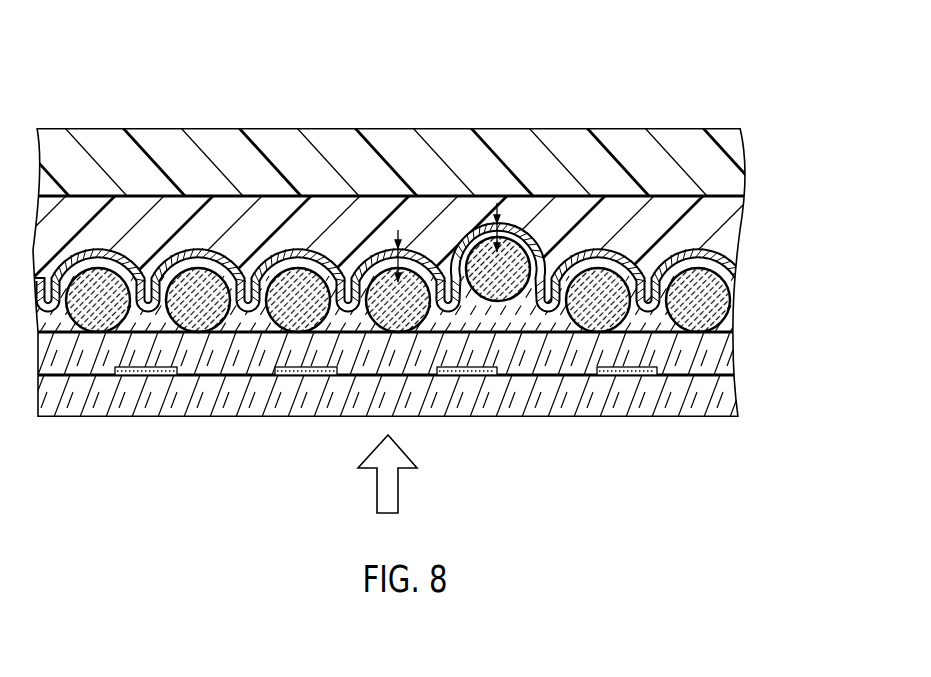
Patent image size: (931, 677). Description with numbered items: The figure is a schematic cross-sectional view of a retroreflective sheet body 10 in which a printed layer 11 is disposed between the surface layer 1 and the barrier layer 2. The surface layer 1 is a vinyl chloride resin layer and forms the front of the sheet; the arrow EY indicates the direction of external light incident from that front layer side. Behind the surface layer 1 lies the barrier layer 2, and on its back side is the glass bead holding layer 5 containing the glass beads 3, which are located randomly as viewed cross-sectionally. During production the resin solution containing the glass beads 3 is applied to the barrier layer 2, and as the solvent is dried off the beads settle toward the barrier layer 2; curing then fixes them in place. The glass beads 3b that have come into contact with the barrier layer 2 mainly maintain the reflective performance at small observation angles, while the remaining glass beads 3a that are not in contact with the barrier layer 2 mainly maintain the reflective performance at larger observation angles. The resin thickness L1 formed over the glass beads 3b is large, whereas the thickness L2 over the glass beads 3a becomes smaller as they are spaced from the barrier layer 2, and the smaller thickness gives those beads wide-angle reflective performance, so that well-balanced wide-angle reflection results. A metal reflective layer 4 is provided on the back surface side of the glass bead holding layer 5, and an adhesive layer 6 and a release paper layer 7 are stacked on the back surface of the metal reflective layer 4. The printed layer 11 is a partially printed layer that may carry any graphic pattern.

The surface layer 1 is at (715, 403).
The barrier layer 2 is at (712, 353).
The glass beads 3 is at (398, 185).
The glass beads not in contact with the barrier layer 3a is at (203, 250).
The glass beads in contact with the barrier layer 3b is at (102, 278).
The metal reflective layer 4 is at (723, 255).
The glass bead holding layer 5 is at (735, 323).
The adhesive layer 6 is at (710, 223).
The release paper layer 7 is at (710, 162).
The retroreflective sheet body 10 is at (795, 150).
The printed layer 11 is at (150, 375).
The thickness of resin on glass beads in contact with the barrier layer L1 is at (402, 242).
The thickness of resin on glass beads not in contact with the barrier layer L2 is at (500, 226).
The direction of external light EY is at (398, 487).